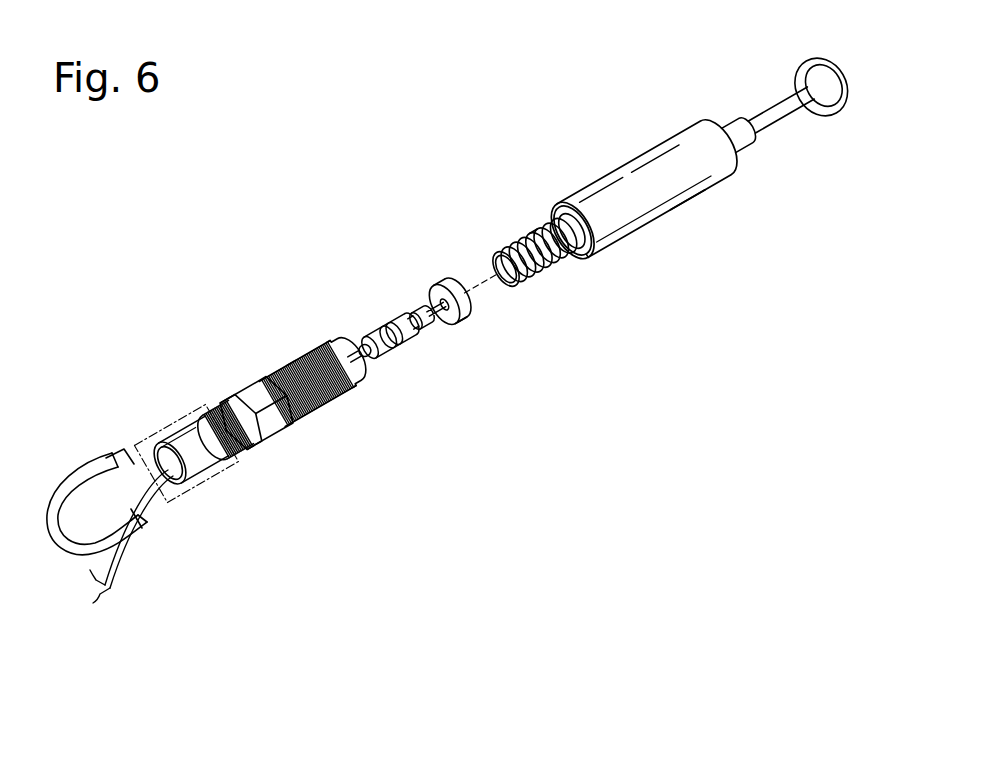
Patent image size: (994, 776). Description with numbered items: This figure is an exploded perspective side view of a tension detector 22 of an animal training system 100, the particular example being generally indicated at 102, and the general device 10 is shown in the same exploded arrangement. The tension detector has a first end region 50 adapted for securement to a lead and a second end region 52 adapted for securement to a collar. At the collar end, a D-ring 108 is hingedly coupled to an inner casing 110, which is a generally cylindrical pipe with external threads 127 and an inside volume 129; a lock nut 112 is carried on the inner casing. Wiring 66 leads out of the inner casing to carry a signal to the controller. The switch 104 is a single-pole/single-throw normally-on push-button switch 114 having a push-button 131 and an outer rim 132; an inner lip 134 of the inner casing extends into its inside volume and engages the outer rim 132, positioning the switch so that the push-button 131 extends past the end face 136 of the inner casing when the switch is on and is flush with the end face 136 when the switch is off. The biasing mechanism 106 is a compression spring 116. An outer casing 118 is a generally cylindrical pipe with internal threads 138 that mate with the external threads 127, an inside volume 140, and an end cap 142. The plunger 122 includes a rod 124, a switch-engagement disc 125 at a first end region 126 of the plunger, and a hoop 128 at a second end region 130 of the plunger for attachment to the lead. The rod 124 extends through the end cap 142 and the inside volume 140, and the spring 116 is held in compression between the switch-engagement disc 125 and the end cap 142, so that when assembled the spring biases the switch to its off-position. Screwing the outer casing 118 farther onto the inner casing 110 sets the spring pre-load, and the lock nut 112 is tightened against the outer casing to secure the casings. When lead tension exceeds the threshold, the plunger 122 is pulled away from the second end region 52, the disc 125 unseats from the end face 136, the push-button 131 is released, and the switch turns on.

The sampling device 10 is at (125, 190).
The animal training system 100 is at (133, 240).
The tension detector 22 is at (205, 258).
The illustrative example of tension detector 102 is at (218, 295).
The second end region 52 is at (140, 408).
The D-ring 108 is at (93, 467).
The inner casing 110 is at (190, 418).
The lock nut 112 is at (248, 390).
The inside volume 129 is at (165, 493).
The wiring 66 is at (113, 580).
The external threads 127 is at (300, 410).
The end face 136 is at (352, 373).
The inner lip 134 is at (310, 402).
The switch 104 is at (394, 327).
The outer rim 132 is at (398, 347).
The push-button switch 114 is at (393, 322).
The push-button 131 is at (425, 330).
The first end region 126 is at (441, 282).
The switch-engagement disc 125 is at (462, 316).
The biasing mechanism 106 is at (498, 262).
The compression spring 116 is at (533, 232).
The outer casing 118 is at (660, 142).
The internal threads 138 is at (568, 262).
The inside volume 140 is at (630, 220).
The end cap 142 is at (738, 122).
The plunger 122 is at (772, 87).
The rod 124 is at (760, 140).
The second end region 130 is at (827, 63).
The hoop 128 is at (845, 88).
The first end region 50 is at (778, 62).